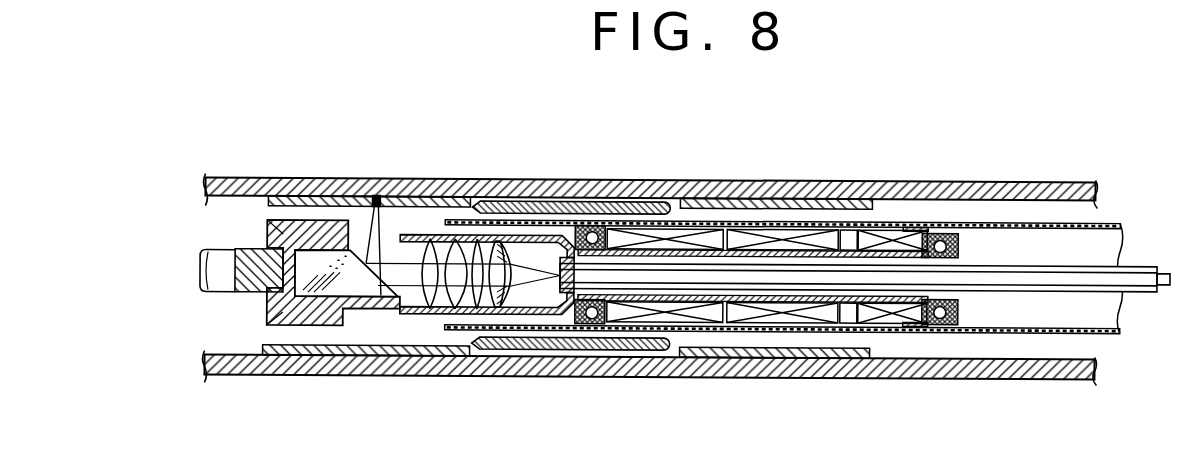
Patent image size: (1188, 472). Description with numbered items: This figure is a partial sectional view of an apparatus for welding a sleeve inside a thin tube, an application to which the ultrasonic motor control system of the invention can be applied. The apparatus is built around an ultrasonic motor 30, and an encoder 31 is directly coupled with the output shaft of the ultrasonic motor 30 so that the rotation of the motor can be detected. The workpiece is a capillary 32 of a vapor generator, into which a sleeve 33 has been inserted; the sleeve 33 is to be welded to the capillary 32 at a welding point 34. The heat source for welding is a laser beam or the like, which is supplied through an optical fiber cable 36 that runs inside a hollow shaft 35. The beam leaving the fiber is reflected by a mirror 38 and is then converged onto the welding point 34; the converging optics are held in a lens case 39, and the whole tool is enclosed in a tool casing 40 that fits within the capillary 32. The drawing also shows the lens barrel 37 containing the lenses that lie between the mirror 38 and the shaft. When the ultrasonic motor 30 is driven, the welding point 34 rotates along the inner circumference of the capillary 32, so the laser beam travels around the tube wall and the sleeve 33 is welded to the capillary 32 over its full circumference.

The ultrasonic motor 30 is at (710, 242).
The encoder 31 is at (907, 237).
The capillary 32 is at (494, 180).
The sleeve 33 is at (540, 208).
The welding point 34 is at (378, 197).
The hollow shaft 35 is at (962, 252).
The optical fiber cable 36 is at (1028, 289).
The lens barrel 37 is at (457, 315).
The mirror 38 is at (320, 260).
The lens case 39 is at (367, 312).
The tool casing 40 is at (1108, 222).